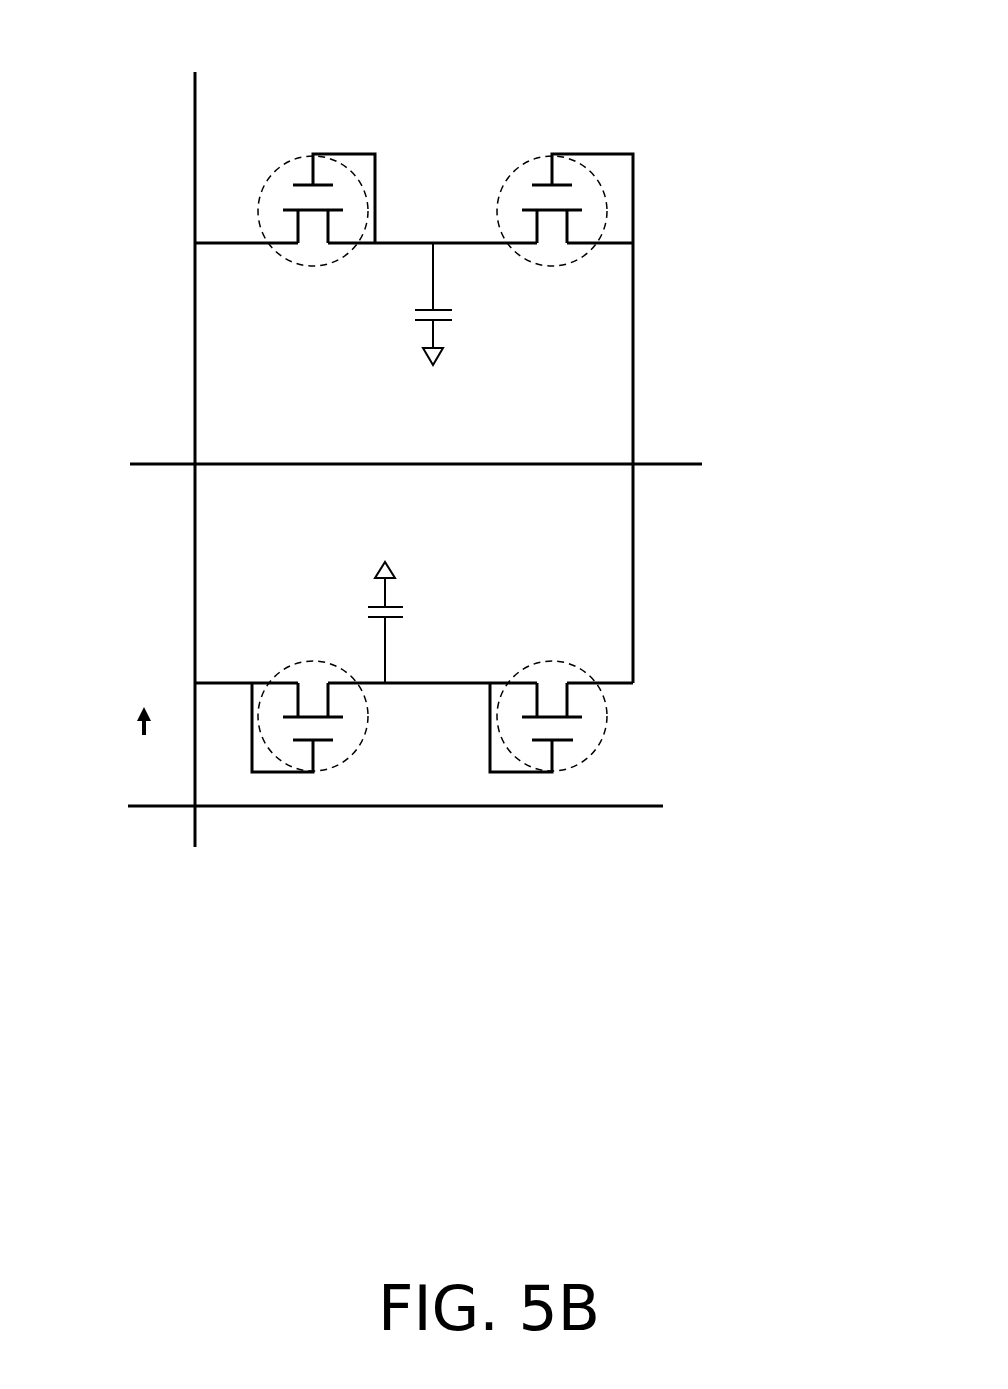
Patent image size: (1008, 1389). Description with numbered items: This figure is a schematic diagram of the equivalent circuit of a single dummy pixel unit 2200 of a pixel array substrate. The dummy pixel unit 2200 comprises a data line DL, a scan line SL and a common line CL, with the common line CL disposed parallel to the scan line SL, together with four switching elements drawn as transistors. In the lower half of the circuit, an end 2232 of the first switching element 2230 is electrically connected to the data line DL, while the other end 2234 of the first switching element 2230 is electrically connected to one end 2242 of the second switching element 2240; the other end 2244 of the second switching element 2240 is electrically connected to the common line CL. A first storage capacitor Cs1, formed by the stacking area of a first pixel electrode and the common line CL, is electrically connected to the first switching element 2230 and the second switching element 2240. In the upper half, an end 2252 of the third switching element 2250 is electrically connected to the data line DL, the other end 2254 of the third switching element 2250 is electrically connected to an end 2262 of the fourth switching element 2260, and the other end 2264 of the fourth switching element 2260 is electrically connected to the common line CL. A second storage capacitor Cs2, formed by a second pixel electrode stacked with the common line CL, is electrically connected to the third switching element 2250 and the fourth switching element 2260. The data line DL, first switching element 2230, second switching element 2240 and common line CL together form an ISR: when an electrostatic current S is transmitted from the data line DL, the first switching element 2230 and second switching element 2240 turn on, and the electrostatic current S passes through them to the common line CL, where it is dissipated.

The dummy pixel unit 2200 is at (875, 1113).
The first switching element 2230 is at (345, 760).
The end of the first switching element 2232 is at (229, 683).
The other end of the first switching element 2234 is at (320, 683).
The second switching element 2240 is at (583, 765).
The end of the second switching element 2242 is at (517, 680).
The other end of the second switching element 2244 is at (610, 680).
The third switching element 2250 is at (297, 157).
The end of the third switching element 2252 is at (285, 255).
The other end of the third switching element 2254 is at (385, 245).
The fourth switching element 2260 is at (505, 162).
The end of the fourth switching element 2262 is at (515, 247).
The other end of the fourth switching element 2264 is at (633, 279).
The data line DL is at (195, 153).
The common line CL is at (662, 462).
The scan line SL is at (643, 803).
The first storage capacitor Cs1 is at (375, 590).
The second storage capacitor Cs2 is at (435, 331).
The electrostatic current S is at (143, 749).